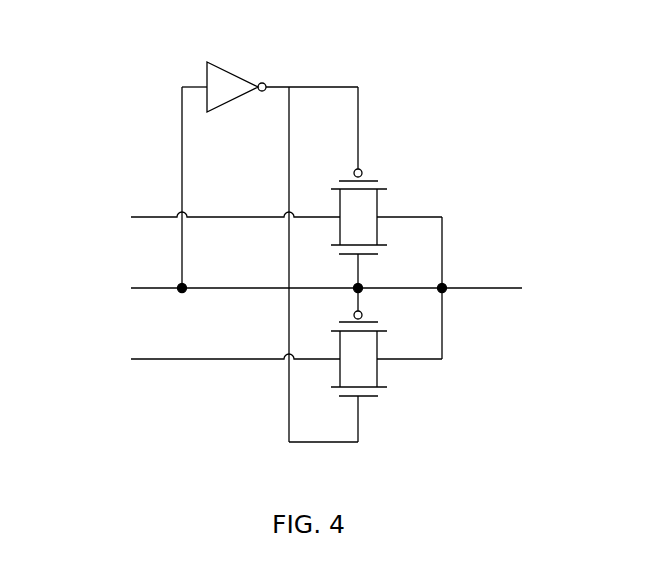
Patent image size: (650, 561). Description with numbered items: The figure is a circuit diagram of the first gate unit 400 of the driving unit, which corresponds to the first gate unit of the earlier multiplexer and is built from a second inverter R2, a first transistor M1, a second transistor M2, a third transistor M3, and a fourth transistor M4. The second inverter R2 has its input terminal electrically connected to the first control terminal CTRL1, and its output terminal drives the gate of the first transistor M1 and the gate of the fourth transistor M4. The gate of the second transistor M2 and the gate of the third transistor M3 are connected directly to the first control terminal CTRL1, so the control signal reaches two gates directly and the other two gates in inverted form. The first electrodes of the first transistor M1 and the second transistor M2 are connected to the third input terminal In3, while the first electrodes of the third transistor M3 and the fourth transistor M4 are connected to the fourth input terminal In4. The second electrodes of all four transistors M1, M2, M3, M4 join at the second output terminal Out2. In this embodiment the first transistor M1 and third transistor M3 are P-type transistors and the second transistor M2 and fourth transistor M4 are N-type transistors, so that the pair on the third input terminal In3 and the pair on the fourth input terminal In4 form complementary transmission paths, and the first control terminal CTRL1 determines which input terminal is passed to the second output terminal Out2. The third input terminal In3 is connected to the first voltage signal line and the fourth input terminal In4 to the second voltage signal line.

The first gate unit 400 is at (560, 36).
The second inverter R2 is at (236, 99).
The first transistor M1 is at (372, 193).
The second transistor M2 is at (372, 235).
The third transistor M3 is at (372, 335).
The fourth transistor M4 is at (372, 379).
The third input terminal In3 is at (257, 217).
The fourth input terminal In4 is at (257, 362).
The first control terminal CTRL1 is at (245, 287).
The second output terminal Out2 is at (499, 275).